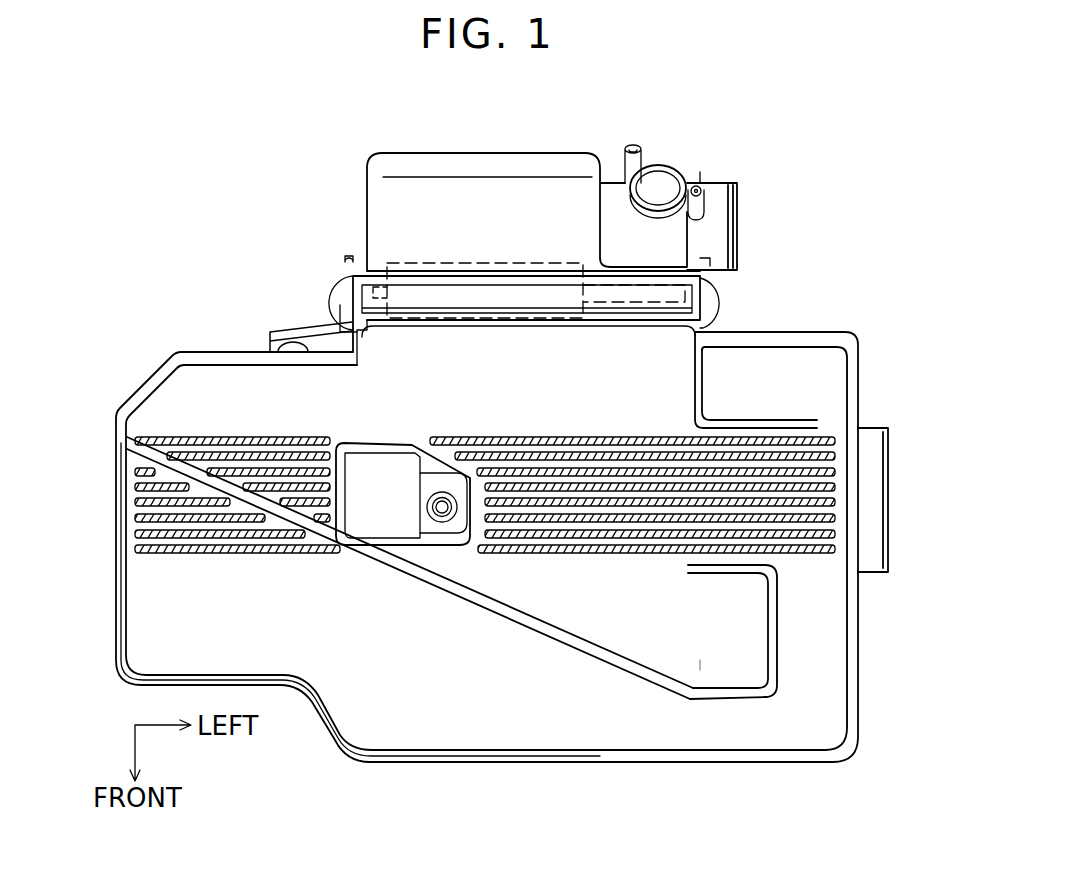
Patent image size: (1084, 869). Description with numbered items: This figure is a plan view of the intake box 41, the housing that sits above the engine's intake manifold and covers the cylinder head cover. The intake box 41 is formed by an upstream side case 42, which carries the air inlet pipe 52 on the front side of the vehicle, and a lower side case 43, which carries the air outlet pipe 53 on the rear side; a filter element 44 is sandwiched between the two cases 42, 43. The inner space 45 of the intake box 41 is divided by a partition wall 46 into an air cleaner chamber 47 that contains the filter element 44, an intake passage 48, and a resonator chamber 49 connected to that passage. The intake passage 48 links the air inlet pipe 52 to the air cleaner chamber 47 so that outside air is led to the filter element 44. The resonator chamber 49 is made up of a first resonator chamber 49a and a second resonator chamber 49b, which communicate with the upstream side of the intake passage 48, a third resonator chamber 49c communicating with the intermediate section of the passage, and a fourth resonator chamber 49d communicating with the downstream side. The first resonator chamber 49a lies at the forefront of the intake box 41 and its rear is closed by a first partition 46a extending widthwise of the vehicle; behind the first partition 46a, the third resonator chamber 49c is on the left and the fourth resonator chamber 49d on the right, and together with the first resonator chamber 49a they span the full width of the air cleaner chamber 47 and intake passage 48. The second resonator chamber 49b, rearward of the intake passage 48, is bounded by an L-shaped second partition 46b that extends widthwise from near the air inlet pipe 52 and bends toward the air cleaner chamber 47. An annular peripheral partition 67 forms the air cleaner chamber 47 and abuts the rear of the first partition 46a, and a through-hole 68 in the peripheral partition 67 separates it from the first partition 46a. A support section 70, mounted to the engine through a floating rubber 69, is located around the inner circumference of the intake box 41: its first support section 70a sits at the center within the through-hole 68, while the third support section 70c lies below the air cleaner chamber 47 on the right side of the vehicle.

The intake box 41 is at (768, 145).
The upstream side case 42 is at (113, 632).
The lower side case 43 is at (366, 166).
The filter element 44 is at (557, 265).
The inner space 45 is at (413, 658).
The partition wall 46 is at (776, 648).
The first partition 46a is at (772, 603).
The second partition 46b is at (695, 395).
The air cleaner chamber 47 is at (445, 177).
The intake passage 48 is at (780, 435).
The resonator chamber 49 is at (698, 653).
The first resonator chamber 49a is at (617, 733).
The second resonator chamber 49b is at (757, 355).
The third resonator chamber 49c is at (730, 655).
The fourth resonator chamber 49d is at (195, 373).
The air inlet pipe 52 is at (865, 442).
The air outlet pipe 53 is at (723, 198).
The peripheral partition 67 is at (365, 447).
The through-hole 68 is at (365, 495).
The floating rubber 69 is at (440, 515).
The support section 70 is at (452, 538).
The first support section 70a is at (443, 493).
The third support section 70c is at (268, 340).